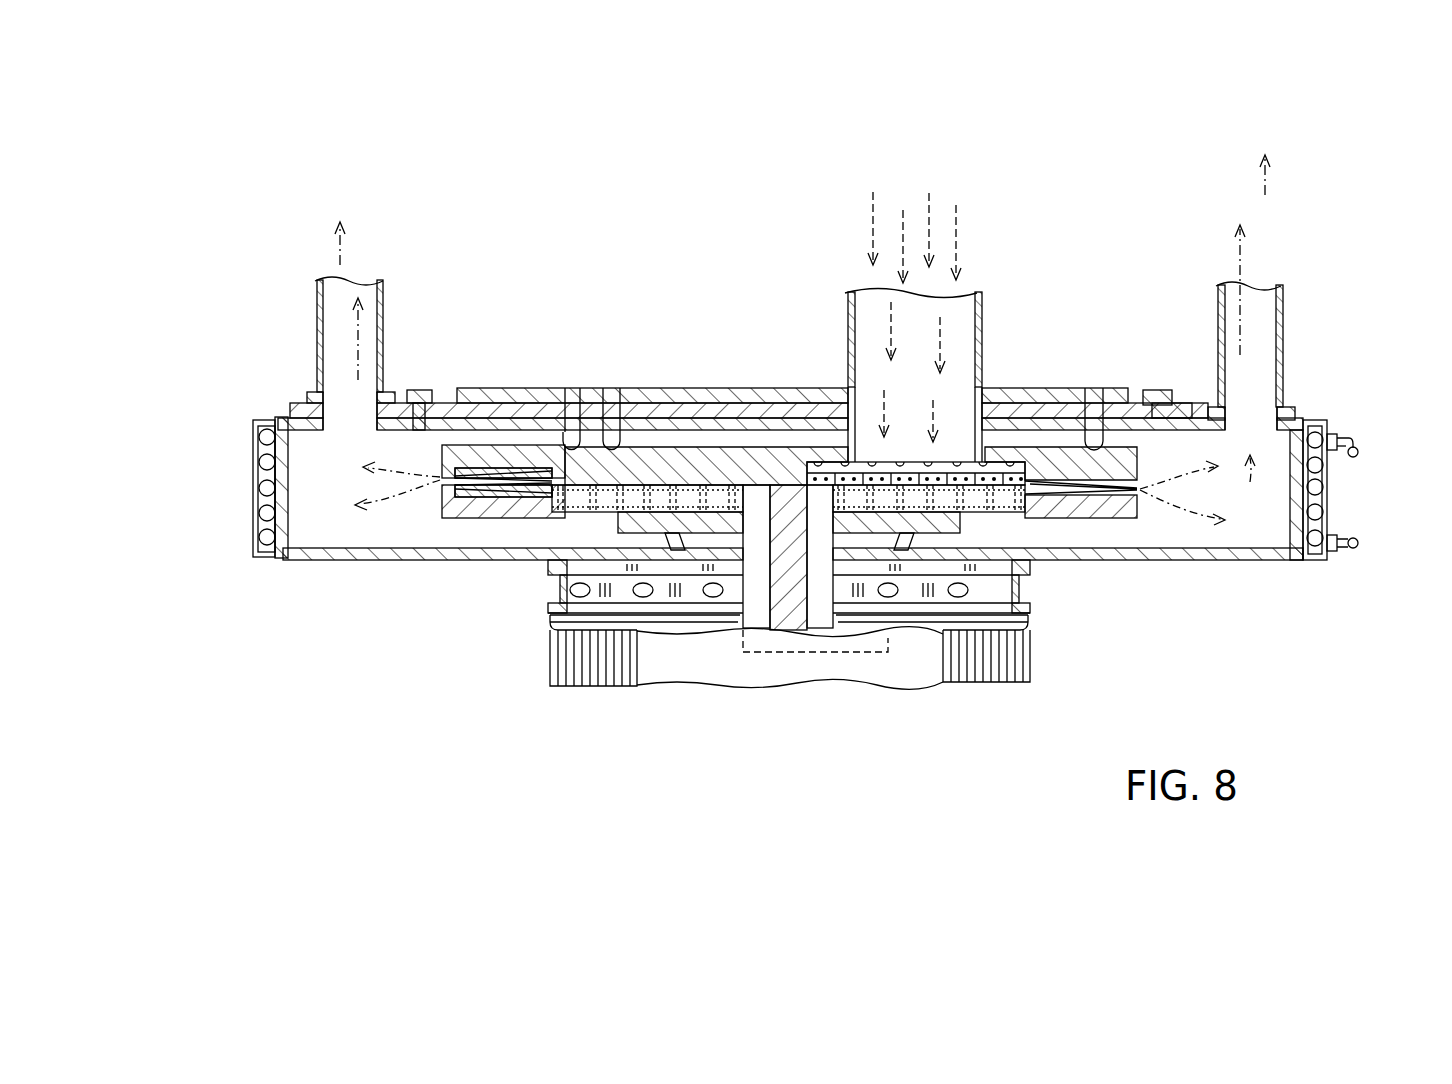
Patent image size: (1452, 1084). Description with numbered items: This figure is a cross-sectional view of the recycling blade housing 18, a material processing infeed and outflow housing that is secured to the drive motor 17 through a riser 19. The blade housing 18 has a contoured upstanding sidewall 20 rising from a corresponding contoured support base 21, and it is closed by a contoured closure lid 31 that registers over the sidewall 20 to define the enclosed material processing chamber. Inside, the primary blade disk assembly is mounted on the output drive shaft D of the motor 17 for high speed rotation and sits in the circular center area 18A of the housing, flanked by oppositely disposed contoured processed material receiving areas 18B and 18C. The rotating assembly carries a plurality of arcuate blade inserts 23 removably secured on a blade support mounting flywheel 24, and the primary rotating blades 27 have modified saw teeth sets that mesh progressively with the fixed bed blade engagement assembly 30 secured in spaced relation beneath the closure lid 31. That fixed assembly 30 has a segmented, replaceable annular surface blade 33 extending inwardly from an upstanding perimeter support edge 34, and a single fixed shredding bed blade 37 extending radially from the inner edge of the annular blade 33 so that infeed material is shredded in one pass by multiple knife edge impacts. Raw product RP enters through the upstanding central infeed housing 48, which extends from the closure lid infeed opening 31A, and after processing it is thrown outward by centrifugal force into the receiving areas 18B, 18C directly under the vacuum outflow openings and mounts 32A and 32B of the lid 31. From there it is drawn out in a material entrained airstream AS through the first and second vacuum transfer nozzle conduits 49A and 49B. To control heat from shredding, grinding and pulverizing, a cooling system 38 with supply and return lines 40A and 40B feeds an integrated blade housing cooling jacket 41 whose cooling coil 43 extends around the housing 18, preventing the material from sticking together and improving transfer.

The drive motor 17 is at (660, 678).
The blade housing 18 is at (330, 562).
The circular center area 18A is at (429, 500).
The processed material receiving area 18B is at (301, 530).
The processed material receiving area 18C is at (1263, 510).
The riser 19 is at (556, 593).
The upstanding sidewall 20 is at (303, 463).
The support base 21 is at (1178, 548).
The arcuate blade inserts 23 is at (470, 500).
The blade support mounting flywheel 24 is at (500, 517).
The primary rotating blades 27 is at (690, 500).
The fixed bed blade engagement assembly 30 is at (712, 322).
The blade housing closure lid 31 is at (665, 385).
The closure lid infeed opening 31A is at (1005, 385).
The vacuum duct outflow opening and mount 32A is at (298, 405).
The vacuum duct outflow opening and mount 32B is at (1292, 405).
The segmented fixed annular surface blade 33 is at (500, 470).
The upstanding perimeter support edge 34 is at (445, 448).
The fixed shredding bed blade 37 is at (1035, 388).
The cooling system 38 is at (1341, 486).
The supply line 40A is at (1345, 433).
The return line 40B is at (1345, 552).
The blade housing cooling jacket 41 is at (252, 492).
The cooling coil 43 is at (258, 526).
The central infeed housing 48 is at (986, 311).
The first vacuum transfer nozzle conduit 49A is at (370, 340).
The second vacuum transfer nozzle conduit 49B is at (1270, 310).
The material entrained airstream AS is at (345, 258).
The raw product RP is at (957, 222).
The output drive shaft D is at (793, 615).